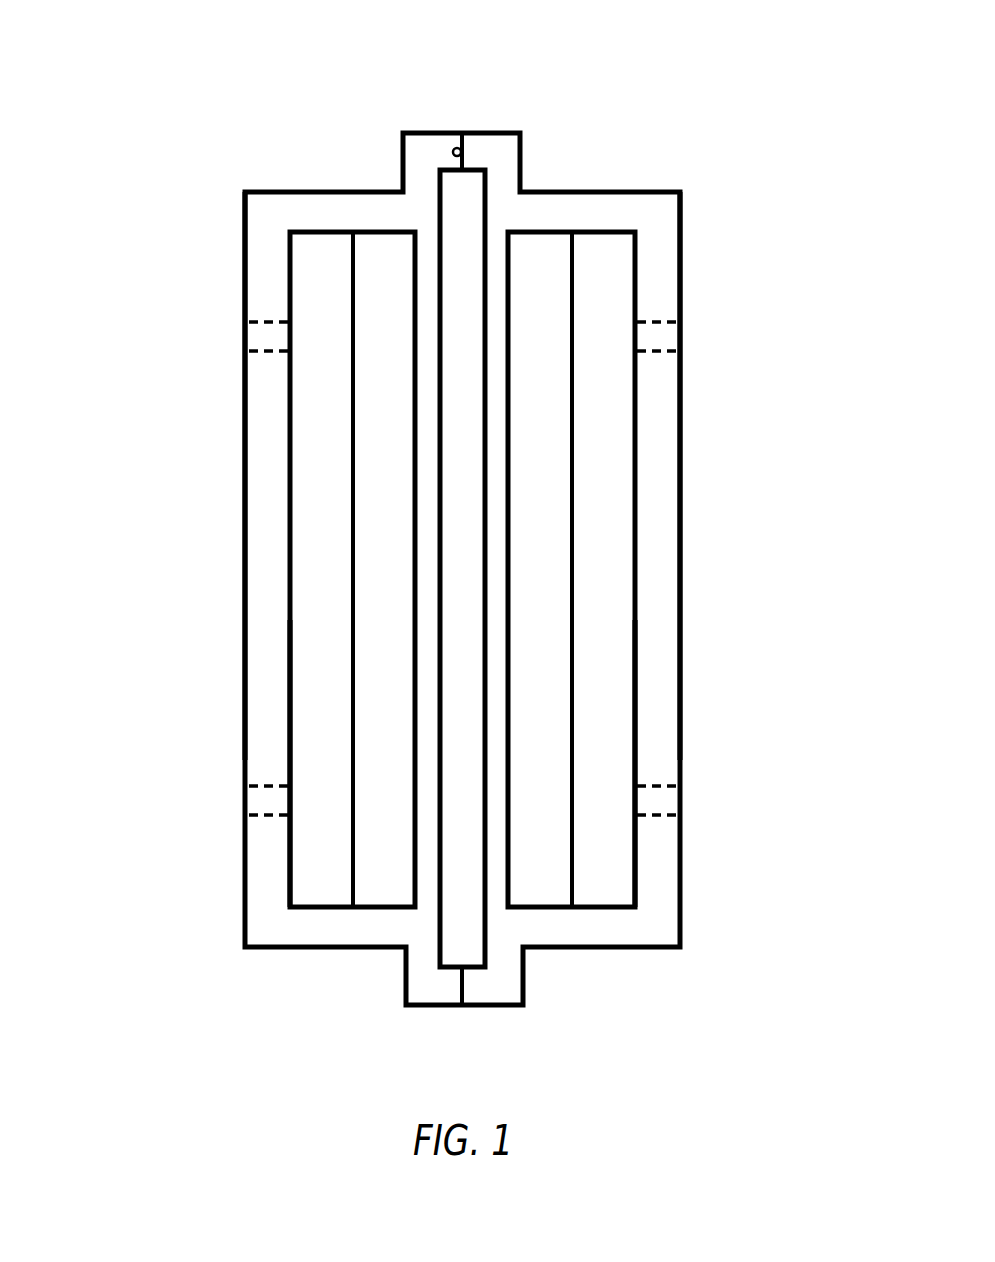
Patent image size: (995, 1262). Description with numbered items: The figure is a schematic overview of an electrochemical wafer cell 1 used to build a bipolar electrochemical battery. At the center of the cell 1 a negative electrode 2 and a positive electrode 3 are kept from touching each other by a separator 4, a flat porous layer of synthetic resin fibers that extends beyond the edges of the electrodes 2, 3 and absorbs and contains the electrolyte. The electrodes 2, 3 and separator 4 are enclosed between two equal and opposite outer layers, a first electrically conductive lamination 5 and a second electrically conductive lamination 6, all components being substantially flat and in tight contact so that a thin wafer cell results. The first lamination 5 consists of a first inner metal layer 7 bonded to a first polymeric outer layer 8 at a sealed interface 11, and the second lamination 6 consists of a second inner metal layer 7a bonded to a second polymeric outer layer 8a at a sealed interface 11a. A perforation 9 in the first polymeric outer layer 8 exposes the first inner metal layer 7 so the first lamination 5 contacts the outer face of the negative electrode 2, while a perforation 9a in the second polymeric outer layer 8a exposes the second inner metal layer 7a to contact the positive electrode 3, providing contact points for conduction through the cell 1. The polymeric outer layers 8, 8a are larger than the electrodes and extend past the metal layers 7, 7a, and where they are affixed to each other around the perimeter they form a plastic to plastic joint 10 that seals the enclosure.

The wafer cell 1 is at (150, 82).
The negative electrode 2 is at (527, 890).
The positive electrode 3 is at (370, 870).
The separator 4 is at (453, 238).
The first electrically conductive lamination 5 is at (592, 645).
The second electrically conductive lamination 6 is at (315, 617).
The first inner metal layer 7 is at (603, 873).
The second inner metal layer 7a is at (323, 737).
The first polymeric outer layer 8 is at (655, 740).
The second polymeric outer layer 8a is at (270, 668).
The perforation 9 is at (672, 342).
The perforation 9a is at (256, 334).
The plastic to plastic joint 10 is at (460, 128).
The sealed interface 11 is at (635, 265).
The sealed interface 11a is at (290, 272).